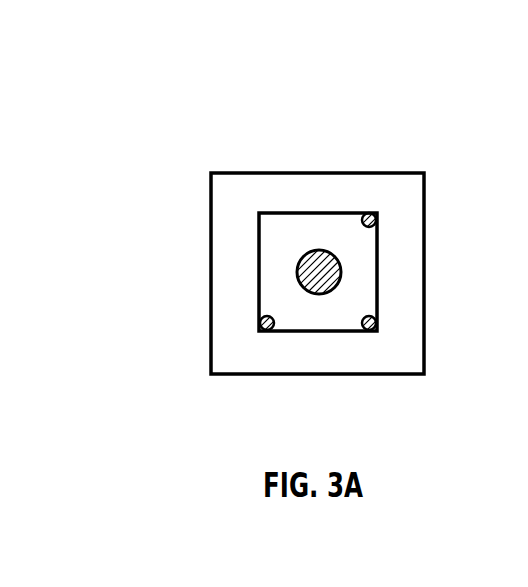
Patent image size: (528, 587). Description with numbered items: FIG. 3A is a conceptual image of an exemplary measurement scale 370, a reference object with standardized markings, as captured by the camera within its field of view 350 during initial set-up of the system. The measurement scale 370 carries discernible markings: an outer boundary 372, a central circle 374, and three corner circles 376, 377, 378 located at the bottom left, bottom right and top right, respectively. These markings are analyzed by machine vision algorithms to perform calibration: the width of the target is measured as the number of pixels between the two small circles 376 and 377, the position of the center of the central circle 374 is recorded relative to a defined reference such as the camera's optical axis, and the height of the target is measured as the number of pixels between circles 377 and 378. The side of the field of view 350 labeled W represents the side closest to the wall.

The field of view 350 is at (400, 173).
The measurement scale 370 is at (261, 193).
The outer boundary 372 is at (320, 212).
The central circle 374 is at (294, 273).
The corner circle 376 is at (258, 323).
The corner circle 377 is at (377, 331).
The corner circle 378 is at (378, 219).
The side of the field of view closest to the wall W is at (318, 375).